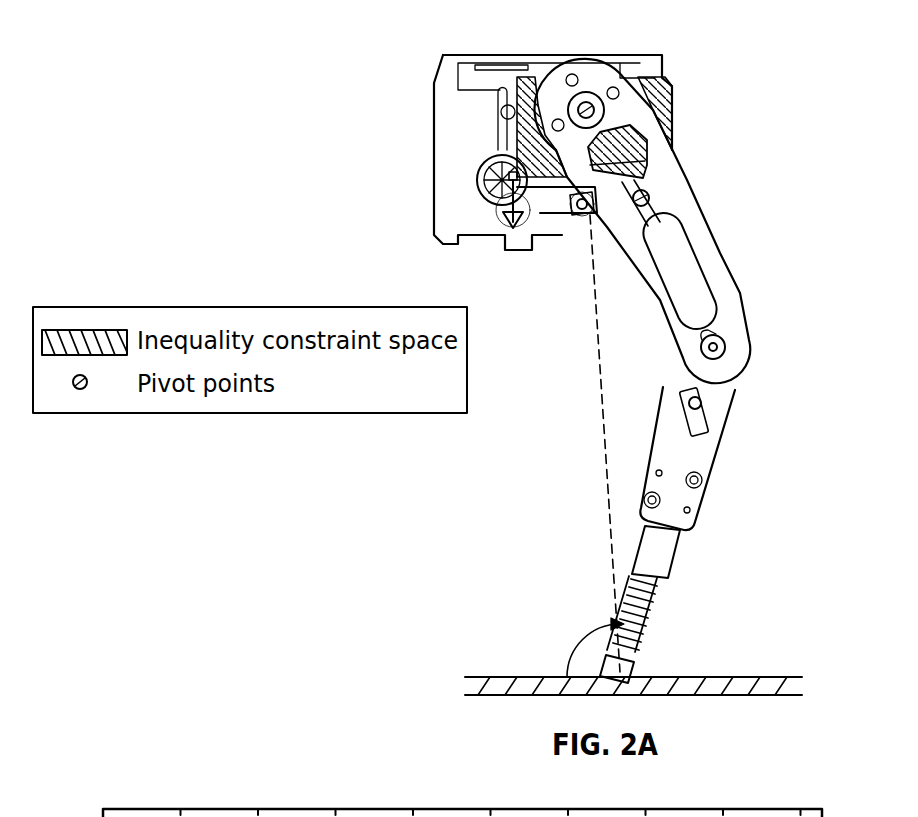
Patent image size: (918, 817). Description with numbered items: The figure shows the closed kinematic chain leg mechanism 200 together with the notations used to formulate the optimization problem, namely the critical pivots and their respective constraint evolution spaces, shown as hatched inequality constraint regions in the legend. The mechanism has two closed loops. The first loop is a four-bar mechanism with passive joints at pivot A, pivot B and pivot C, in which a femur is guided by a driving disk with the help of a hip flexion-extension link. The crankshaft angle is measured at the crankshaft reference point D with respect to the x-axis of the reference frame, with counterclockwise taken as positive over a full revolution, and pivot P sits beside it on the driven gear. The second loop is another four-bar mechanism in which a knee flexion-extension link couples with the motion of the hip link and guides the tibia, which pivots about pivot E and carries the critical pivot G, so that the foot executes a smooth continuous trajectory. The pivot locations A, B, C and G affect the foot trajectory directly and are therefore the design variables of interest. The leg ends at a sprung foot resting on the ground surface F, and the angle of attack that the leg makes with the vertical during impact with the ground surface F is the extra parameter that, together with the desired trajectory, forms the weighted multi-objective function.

The closed kinematic chain leg mechanism 200 is at (672, 115).
The passive joint A is at (596, 106).
The passive joint B is at (649, 196).
The passive joint C is at (583, 208).
The crankshaft reference point D is at (508, 210).
The pivot P is at (490, 180).
The pivot E is at (716, 346).
The critical pivot G is at (698, 404).
The ground surface F is at (662, 677).